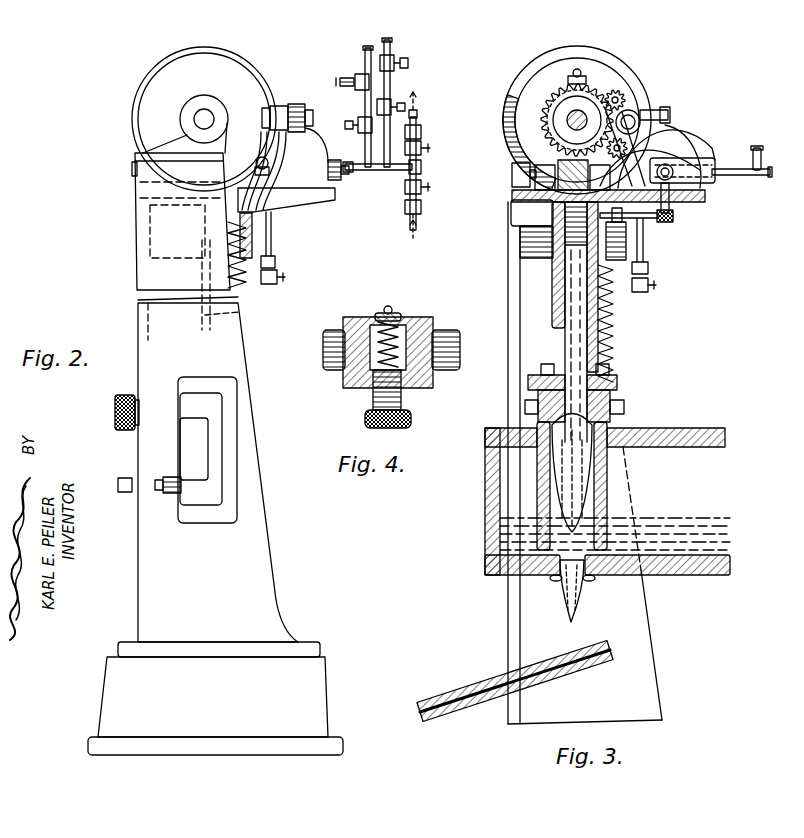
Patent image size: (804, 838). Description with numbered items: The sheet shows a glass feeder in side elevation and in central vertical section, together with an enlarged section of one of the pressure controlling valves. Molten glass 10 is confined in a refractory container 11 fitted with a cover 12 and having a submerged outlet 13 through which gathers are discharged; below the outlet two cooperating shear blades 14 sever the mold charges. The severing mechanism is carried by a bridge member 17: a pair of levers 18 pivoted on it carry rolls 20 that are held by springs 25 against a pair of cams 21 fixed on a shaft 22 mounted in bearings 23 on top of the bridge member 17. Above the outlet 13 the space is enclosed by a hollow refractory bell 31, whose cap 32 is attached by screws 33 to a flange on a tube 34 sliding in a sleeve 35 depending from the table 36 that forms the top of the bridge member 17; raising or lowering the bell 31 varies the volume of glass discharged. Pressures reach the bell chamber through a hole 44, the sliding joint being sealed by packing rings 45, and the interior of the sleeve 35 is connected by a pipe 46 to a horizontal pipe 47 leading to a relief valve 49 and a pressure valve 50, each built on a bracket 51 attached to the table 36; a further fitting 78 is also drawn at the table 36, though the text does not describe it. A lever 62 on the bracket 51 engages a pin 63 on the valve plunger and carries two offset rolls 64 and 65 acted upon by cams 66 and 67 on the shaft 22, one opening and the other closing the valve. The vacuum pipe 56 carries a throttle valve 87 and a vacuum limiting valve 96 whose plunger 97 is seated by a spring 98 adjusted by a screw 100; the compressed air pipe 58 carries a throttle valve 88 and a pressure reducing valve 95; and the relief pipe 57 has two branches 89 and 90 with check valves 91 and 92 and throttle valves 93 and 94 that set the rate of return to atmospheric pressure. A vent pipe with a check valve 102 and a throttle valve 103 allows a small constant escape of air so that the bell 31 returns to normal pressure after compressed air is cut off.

In FIG. 3, the molten glass 10 is at (683, 520).
In FIG. 3, the container 11 is at (705, 576).
In FIG. 3, the cover 12 is at (705, 430).
In FIG. 3, the outlet 13 is at (592, 576).
In FIG. 3, the shear blades 14 is at (558, 582).
In FIG. 2, the bridge member 17 is at (248, 350).
In FIG. 3, the bridge member 17 is at (650, 650).
In FIG. 2, the levers 18 is at (240, 312).
In FIG. 3, the levers 18 is at (648, 253).
In FIG. 2, the rolls 20 is at (278, 105).
In FIG. 3, the rolls 20 is at (650, 110).
In FIG. 2, the cams 21 is at (236, 57).
In FIG. 3, the cams 21 is at (606, 62).
In FIG. 2, the shaft 22 is at (195, 116).
In FIG. 3, the shaft 22 is at (572, 114).
In FIG. 2, the bearings 23 is at (189, 102).
In FIG. 2, the springs 25 is at (246, 290).
In FIG. 3, the springs 25 is at (612, 315).
In FIG. 3, the bell 31 is at (607, 480).
In FIG. 3, the cap 32 is at (538, 394).
In FIG. 3, the screws 33 is at (541, 368).
In FIG. 3, the tube 34 is at (565, 344).
In FIG. 3, the sleeve 35 is at (552, 320).
In FIG. 2, the table 36 is at (330, 200).
In FIG. 3, the table 36 is at (512, 196).
In FIG. 3, the hole 44 is at (624, 406).
In FIG. 3, the packing rings 45 is at (540, 258).
In FIG. 3, the pipe 46 is at (626, 236).
In FIG. 3, the horizontal pipe 47 is at (673, 216).
In FIG. 3, the relief valve 49 is at (705, 160).
In FIG. 2, the pressure valve 50 is at (333, 158).
In FIG. 3, the bracket 51 is at (690, 135).
In FIG. 2, the pipe 56 is at (390, 44).
In FIG. 3, the pipe 56 is at (761, 155).
In FIG. 2, the pipe 57 is at (395, 170).
In FIG. 3, the pipe 57 is at (756, 176).
In FIG. 2, the pipe 58 is at (364, 50).
In FIG. 3, the lever 62 is at (632, 110).
In FIG. 2, the pin 63 is at (257, 160).
In FIG. 3, the pin 63 is at (672, 160).
In FIG. 3, the roll 64 is at (620, 92).
In FIG. 3, the roll 65 is at (630, 148).
In FIG. 3, the cam 66 is at (590, 92).
In FIG. 3, the cam 67 is at (545, 98).
In FIG. 3, the fitting 78 is at (512, 178).
In FIG. 2, the throttle valve 87 is at (406, 107).
In FIG. 2, the valve 88 is at (356, 122).
In FIG. 2, the branch 89 is at (411, 224).
In FIG. 2, the branch 90 is at (418, 116).
In FIG. 2, the check valve 91 is at (421, 210).
In FIG. 2, the check valve 92 is at (421, 128).
In FIG. 2, the throttle valve 93 is at (430, 187).
In FIG. 2, the throttle valve 94 is at (430, 148).
In FIG. 2, the pressure reducing valve 95 is at (340, 76).
In FIG. 2, the valve 96 is at (408, 62).
In FIG. 4, the valve 96 is at (356, 385).
In FIG. 4, the plunger 97 is at (395, 315).
In FIG. 4, the spring 98 is at (400, 335).
In FIG. 4, the screw 100 is at (401, 403).
In FIG. 2, the check valve 102 is at (275, 262).
In FIG. 2, the throttle valve 103 is at (285, 278).